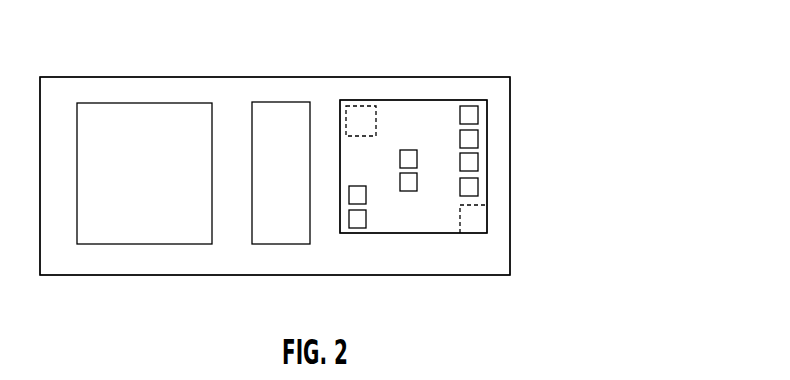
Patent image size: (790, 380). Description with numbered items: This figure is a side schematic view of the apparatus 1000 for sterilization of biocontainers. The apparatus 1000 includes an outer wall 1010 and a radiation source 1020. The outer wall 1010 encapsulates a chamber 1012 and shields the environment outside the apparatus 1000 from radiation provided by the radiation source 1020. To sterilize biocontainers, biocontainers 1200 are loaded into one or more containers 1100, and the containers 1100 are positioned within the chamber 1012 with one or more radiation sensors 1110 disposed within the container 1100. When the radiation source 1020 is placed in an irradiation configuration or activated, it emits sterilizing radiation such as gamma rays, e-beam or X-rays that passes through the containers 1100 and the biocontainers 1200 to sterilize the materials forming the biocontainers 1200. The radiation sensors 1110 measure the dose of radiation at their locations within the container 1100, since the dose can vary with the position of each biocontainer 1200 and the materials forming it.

The apparatus 1000 is at (604, 167).
The outer wall 1010 is at (511, 97).
The chamber 1012 is at (370, 264).
The radiation source 1020 is at (303, 176).
The container 1100 is at (176, 99).
The radiation sensor 1110 is at (358, 108).
The biocontainer 1200 is at (479, 113).